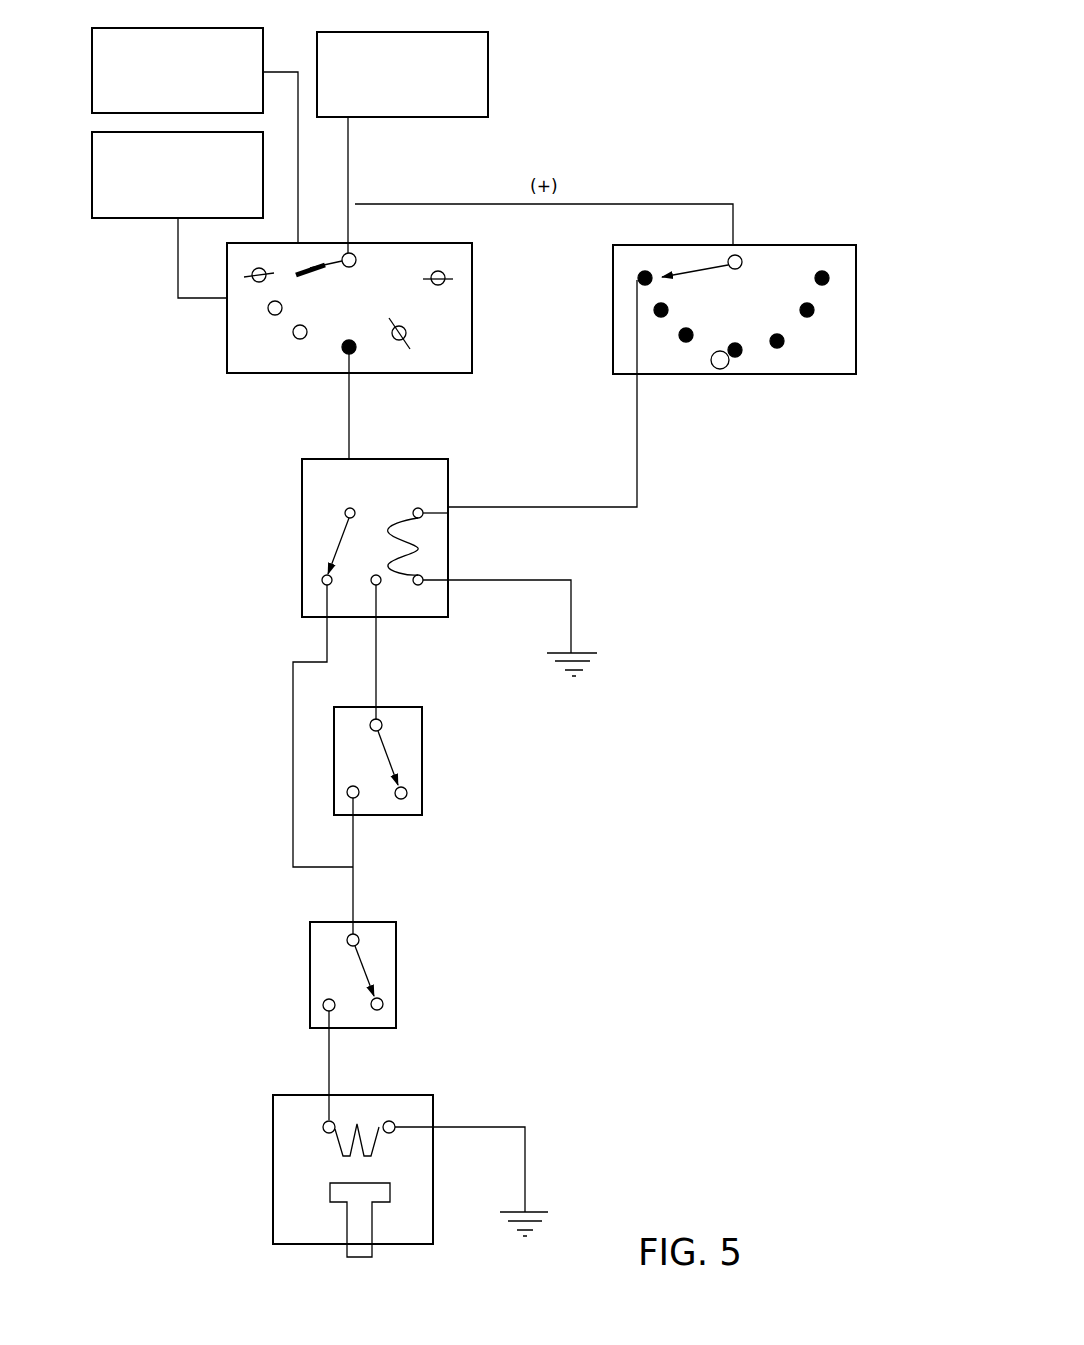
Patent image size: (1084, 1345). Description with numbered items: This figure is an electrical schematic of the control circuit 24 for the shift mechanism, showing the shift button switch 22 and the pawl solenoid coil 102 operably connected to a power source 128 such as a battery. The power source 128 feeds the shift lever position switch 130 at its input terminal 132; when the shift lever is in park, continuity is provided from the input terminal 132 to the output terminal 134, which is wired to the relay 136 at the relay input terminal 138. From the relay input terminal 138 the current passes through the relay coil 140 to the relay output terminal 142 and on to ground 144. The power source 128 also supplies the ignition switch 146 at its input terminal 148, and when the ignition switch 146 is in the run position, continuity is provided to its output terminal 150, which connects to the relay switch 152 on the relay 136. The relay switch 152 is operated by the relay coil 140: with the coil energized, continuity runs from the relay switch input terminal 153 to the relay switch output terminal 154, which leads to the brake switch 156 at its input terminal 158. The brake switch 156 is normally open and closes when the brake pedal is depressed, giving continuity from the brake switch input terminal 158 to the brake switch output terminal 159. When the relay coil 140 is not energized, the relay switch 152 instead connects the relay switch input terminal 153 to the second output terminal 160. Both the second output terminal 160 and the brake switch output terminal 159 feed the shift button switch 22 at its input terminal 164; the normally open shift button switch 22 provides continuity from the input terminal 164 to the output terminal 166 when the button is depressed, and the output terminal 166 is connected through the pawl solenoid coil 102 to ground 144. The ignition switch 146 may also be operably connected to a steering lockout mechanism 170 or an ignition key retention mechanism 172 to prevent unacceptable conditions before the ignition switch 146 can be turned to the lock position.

The shift button switch 22 is at (400, 975).
The control circuit 24 is at (655, 128).
The pawl solenoid coil 102 is at (365, 1122).
The power source 128 is at (493, 72).
The shift lever position switch 130 is at (862, 266).
The input terminal 132 is at (738, 241).
The output terminal 134 is at (636, 376).
The relay 136 is at (302, 553).
The relay input terminal 138 is at (455, 507).
The relay coil 140 is at (428, 540).
The relay output terminal 142 is at (455, 576).
The ground 144 is at (587, 673).
The ignition switch 146 is at (263, 374).
The input terminal 148 is at (352, 244).
The output terminal 150 is at (352, 380).
The relay switch 152 is at (340, 534).
The relay switch input terminal 153 is at (348, 459).
The relay switch output terminal 154 is at (378, 623).
The brake switch 156 is at (425, 773).
The brake switch input terminal 158 is at (380, 699).
The brake switch output terminal 159 is at (356, 820).
The relay switch second output terminal 160 is at (325, 623).
The shift button switch input terminal 164 is at (356, 915).
The shift button switch output terminal 166 is at (332, 1035).
The steering lockout mechanism 170 is at (266, 40).
The ignition key retention mechanism 172 is at (163, 222).